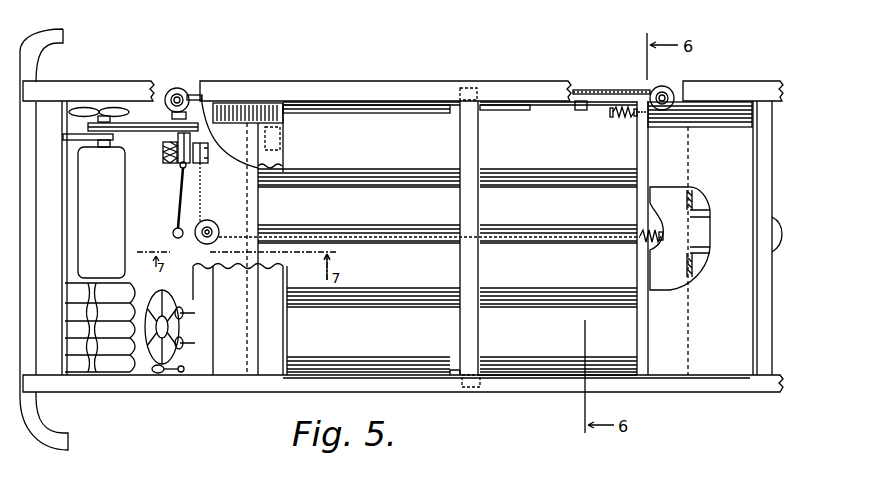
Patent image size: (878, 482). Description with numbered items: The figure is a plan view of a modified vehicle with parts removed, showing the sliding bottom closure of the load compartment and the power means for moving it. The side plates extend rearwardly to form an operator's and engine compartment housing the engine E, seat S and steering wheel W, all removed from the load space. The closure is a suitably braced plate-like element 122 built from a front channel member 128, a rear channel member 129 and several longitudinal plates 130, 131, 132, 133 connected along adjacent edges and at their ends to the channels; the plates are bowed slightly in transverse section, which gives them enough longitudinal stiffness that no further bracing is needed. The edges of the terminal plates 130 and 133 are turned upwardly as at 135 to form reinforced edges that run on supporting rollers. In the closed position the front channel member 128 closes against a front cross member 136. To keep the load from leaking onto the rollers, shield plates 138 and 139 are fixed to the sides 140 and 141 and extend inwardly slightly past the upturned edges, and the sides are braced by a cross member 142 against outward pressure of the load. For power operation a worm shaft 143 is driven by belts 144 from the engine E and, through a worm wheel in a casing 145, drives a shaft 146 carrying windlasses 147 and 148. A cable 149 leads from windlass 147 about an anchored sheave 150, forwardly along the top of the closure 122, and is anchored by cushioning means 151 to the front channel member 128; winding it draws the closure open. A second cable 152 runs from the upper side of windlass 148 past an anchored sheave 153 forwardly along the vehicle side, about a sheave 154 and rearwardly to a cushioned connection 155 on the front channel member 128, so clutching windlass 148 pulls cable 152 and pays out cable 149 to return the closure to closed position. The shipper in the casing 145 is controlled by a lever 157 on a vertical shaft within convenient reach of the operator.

The plate-like closure element 122 is at (402, 151).
The front channel member 128 is at (642, 145).
The rear channel member 129 is at (252, 208).
The longitudinal plate 130 is at (558, 156).
The longitudinal plate 131 is at (558, 217).
The longitudinal plate 132 is at (558, 279).
The longitudinal plate 133 is at (558, 342).
The upturned edge 135 is at (588, 101).
The front cross member 136 is at (663, 275).
The shield plate 138 is at (380, 108).
The shield plate 139 is at (352, 371).
The side 140 is at (524, 103).
The side 141 is at (512, 372).
The cross member 142 is at (467, 322).
The worm shaft 143 is at (209, 100).
The belts 144 is at (126, 133).
The casing 145 is at (190, 143).
The shaft 146 is at (163, 158).
The windlass 147 is at (203, 167).
The windlass 148 is at (172, 170).
The cable 149 is at (203, 208).
The sheave 150 is at (203, 243).
The cushioning means 151 is at (640, 252).
The cable 152 is at (194, 95).
The sheave 153 is at (173, 90).
The sheave 154 is at (662, 91).
The cushioned connection 155 is at (628, 117).
The lever 157 is at (177, 207).
The engine E is at (104, 208).
The seat S is at (133, 290).
The steering wheel W is at (170, 323).